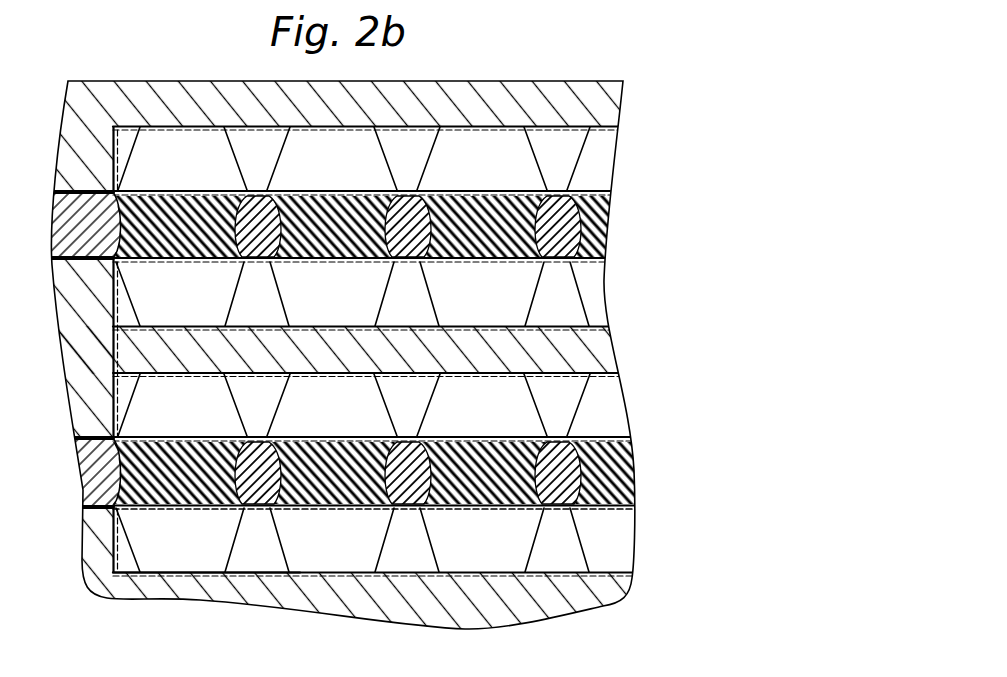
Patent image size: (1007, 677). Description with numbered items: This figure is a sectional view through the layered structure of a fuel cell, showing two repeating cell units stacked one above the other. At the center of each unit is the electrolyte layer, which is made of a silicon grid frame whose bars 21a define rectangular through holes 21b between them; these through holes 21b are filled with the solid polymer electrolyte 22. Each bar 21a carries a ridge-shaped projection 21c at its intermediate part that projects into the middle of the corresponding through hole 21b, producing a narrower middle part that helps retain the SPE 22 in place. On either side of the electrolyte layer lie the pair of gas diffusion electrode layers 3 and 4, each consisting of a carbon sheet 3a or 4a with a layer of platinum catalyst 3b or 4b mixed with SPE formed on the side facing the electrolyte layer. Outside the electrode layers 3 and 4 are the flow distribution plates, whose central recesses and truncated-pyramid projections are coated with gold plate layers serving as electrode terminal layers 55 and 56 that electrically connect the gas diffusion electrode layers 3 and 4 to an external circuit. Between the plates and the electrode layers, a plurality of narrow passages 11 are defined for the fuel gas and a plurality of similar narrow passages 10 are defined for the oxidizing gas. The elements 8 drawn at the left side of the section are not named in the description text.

The gas diffusion electrode layer 3 is at (686, 485).
The carbon sheet 3a is at (618, 512).
The platinum catalyst layer 3b is at (626, 505).
The gas diffusion electrode layer 4 is at (686, 407).
The carbon sheet 4a is at (624, 436).
The platinum catalyst layer 4b is at (621, 450).
The lead electrode 8 is at (82, 438).
The narrow passages 10 is at (365, 307).
The narrow passages 11 is at (190, 174).
The bar 21a is at (410, 195).
The through hole 21b is at (243, 235).
The projection 21c is at (418, 196).
The solid polymer electrolyte 22 is at (285, 256).
The electrode terminal layer 55 is at (600, 327).
The electrode terminal layer 56 is at (604, 125).